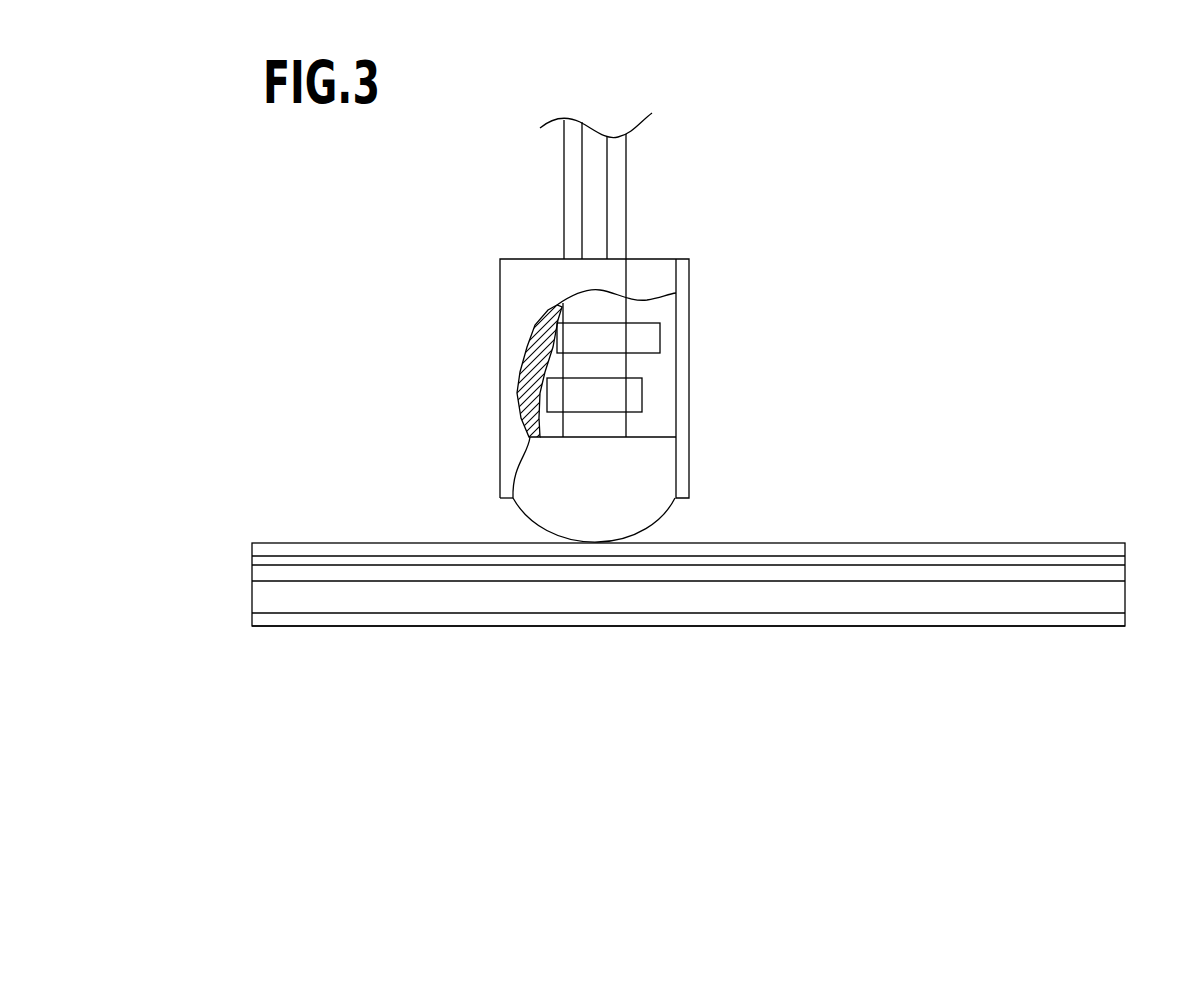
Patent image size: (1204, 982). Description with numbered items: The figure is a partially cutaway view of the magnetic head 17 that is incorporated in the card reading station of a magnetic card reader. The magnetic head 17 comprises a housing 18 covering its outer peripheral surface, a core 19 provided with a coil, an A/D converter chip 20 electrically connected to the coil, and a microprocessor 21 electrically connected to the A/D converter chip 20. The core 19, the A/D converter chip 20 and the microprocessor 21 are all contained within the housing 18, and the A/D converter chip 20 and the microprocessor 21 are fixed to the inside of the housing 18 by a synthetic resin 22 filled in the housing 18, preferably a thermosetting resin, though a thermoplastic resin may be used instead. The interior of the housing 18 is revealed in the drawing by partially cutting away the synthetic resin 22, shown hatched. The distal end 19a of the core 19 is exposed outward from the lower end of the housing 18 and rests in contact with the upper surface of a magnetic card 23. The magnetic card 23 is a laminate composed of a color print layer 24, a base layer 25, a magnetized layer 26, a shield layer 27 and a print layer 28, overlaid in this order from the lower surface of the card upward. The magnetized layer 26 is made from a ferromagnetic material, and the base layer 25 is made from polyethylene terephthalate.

The magnetic head 17 is at (705, 240).
The housing 18 is at (683, 315).
The core 19 is at (638, 478).
The distal end 19a is at (625, 518).
The A/D converter chip 20 is at (635, 392).
The microprocessor 21 is at (652, 340).
The synthetic resin 22 is at (543, 342).
The magnetic card 23 is at (1125, 543).
The color print layer 24 is at (967, 618).
The base layer 25 is at (870, 602).
The magnetized layer 26 is at (1010, 572).
The shield layer 27 is at (927, 562).
The print layer 28 is at (855, 545).